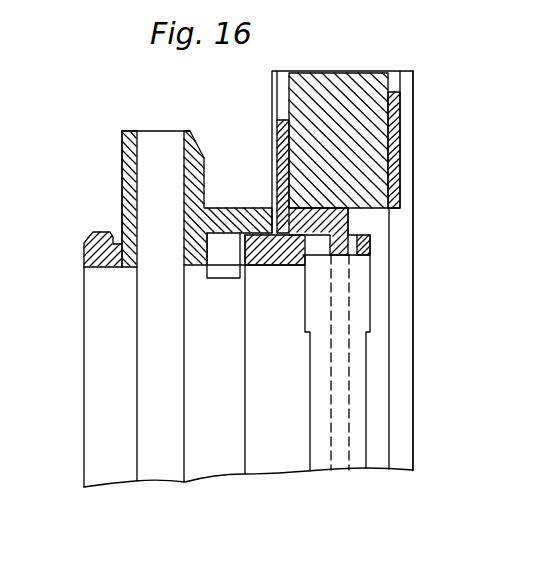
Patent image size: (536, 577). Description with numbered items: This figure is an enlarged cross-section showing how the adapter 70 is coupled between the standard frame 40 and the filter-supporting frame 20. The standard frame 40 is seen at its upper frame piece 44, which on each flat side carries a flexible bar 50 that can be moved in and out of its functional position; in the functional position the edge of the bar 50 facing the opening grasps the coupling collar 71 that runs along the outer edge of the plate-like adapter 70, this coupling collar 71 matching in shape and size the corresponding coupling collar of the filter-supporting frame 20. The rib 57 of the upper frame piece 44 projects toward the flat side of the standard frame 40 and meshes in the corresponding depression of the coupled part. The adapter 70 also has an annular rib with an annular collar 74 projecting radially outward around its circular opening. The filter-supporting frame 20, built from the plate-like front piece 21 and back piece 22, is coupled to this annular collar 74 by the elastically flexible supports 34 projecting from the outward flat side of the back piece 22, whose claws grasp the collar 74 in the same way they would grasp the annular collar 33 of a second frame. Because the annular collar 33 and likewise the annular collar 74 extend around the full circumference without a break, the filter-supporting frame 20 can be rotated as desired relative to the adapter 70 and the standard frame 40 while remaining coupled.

The filter-supporting frame 20 is at (176, 176).
The front piece 21 is at (122, 152).
The back piece 22 is at (204, 176).
The annular collar 33 is at (96, 232).
The supports 34 is at (230, 238).
The standard frame 40 is at (350, 250).
The upper frame piece 44 is at (337, 74).
The flexible bar 50 is at (278, 126).
The rib 57 is at (368, 249).
The adapter 70 is at (271, 478).
The coupling collar 71 is at (303, 213).
The annular collar 74 is at (255, 268).